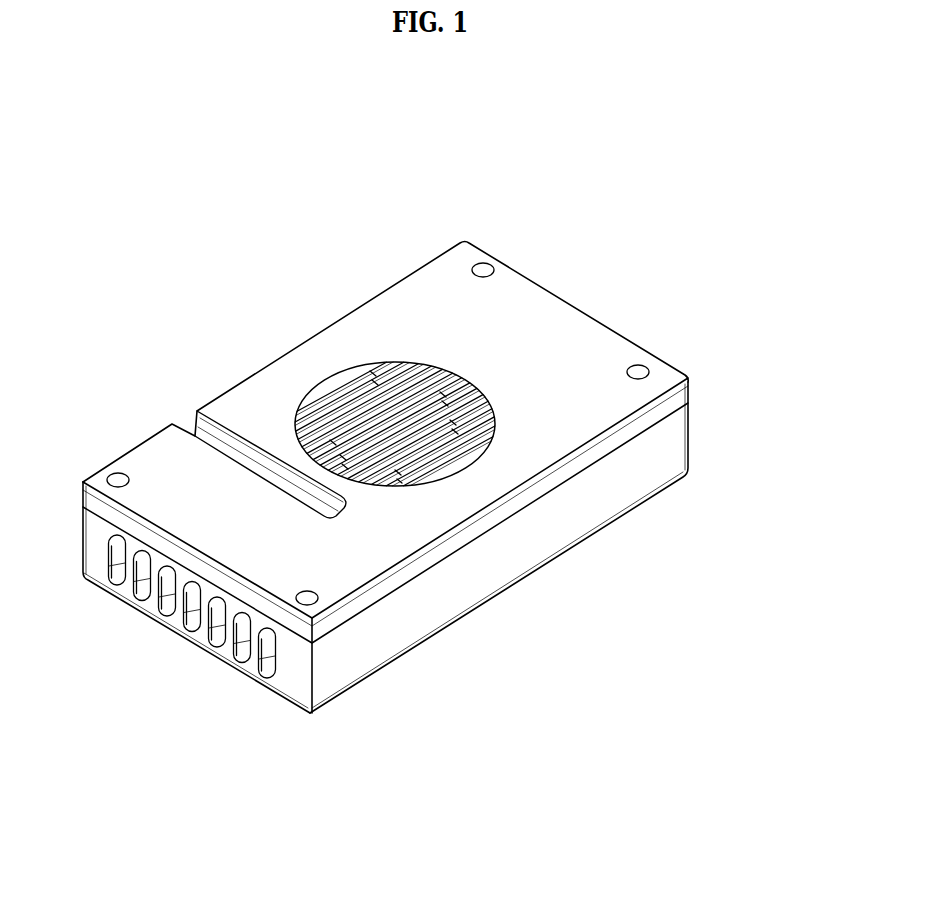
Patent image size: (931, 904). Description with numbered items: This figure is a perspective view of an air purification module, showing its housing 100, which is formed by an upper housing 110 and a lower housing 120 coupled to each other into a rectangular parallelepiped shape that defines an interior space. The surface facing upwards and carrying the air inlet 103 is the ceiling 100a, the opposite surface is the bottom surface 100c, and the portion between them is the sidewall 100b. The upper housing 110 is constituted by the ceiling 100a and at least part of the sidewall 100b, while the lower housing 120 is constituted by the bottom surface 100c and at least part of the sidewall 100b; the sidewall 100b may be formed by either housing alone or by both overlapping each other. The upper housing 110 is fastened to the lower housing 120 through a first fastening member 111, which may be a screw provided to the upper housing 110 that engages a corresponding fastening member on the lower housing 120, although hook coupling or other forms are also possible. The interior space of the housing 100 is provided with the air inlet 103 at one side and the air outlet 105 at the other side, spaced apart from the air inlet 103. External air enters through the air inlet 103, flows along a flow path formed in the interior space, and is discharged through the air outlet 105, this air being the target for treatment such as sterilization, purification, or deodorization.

The housing 100 is at (436, 518).
The upper housing 110 is at (409, 452).
The lower housing 120 is at (419, 588).
The ceiling 100a is at (390, 549).
The sidewall 100b is at (390, 620).
The bottom surface 100c is at (276, 638).
The air inlet 103 is at (328, 403).
The air outlet 105 is at (268, 650).
The first fastening member 111 is at (120, 477).